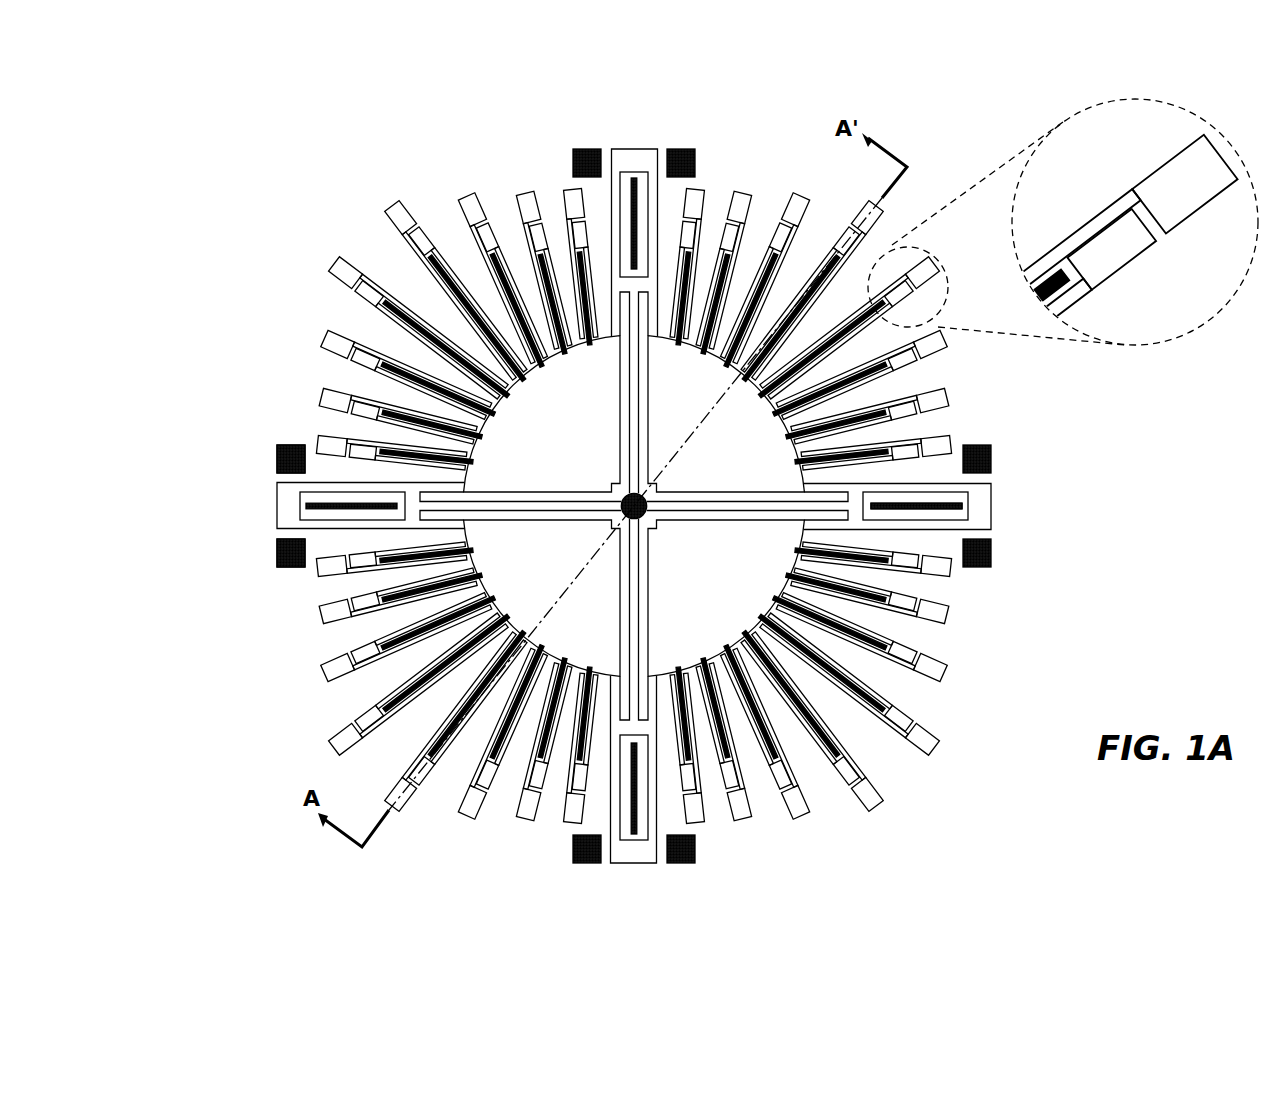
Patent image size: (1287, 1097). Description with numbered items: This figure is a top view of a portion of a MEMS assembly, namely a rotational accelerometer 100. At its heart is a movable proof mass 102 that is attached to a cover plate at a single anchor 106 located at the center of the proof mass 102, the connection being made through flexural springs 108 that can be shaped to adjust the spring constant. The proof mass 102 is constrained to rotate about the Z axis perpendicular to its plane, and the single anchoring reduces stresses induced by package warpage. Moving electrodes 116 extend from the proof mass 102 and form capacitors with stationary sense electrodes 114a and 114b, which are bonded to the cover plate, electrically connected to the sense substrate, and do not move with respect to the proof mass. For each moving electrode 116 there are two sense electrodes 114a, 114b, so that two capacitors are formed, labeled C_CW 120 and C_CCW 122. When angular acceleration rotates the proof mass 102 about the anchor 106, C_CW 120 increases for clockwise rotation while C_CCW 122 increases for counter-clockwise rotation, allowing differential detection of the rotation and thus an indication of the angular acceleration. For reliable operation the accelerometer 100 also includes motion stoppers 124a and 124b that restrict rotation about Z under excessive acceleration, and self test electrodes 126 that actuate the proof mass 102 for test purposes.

The rotational accelerometer 100 is at (327, 180).
The proof mass 102 is at (725, 612).
The anchor 106 is at (653, 518).
The flexural springs 108 is at (645, 583).
The sense electrode 114a is at (389, 292).
The sense electrode 114b is at (353, 292).
The moving electrode 116 is at (1051, 287).
The C_CW capacitor 120 is at (1074, 296).
The C_CCW capacitor 122 is at (1038, 267).
The motion stopper 124a is at (263, 452).
The motion stopper 124b is at (263, 552).
The self test electrode 126 is at (953, 515).